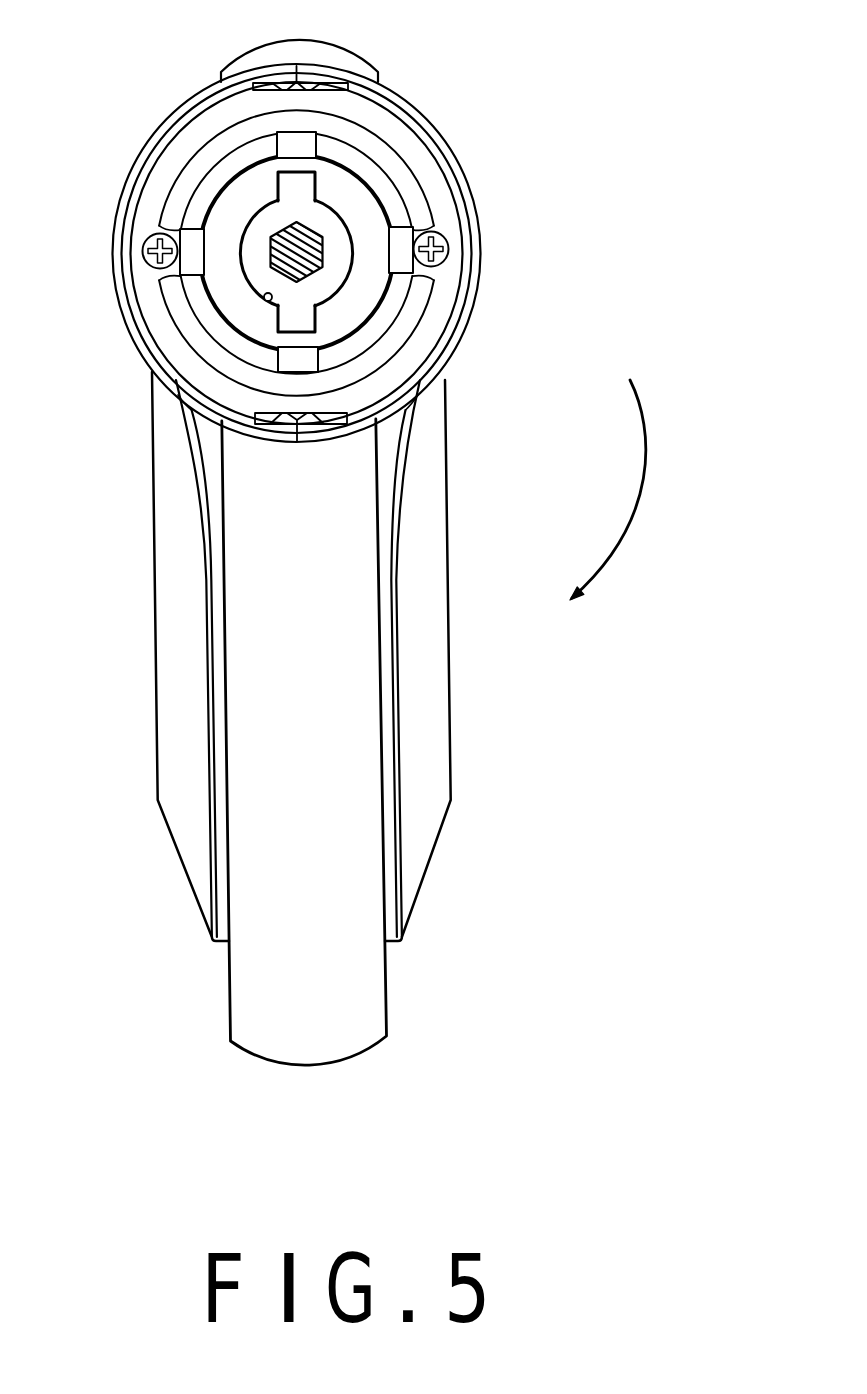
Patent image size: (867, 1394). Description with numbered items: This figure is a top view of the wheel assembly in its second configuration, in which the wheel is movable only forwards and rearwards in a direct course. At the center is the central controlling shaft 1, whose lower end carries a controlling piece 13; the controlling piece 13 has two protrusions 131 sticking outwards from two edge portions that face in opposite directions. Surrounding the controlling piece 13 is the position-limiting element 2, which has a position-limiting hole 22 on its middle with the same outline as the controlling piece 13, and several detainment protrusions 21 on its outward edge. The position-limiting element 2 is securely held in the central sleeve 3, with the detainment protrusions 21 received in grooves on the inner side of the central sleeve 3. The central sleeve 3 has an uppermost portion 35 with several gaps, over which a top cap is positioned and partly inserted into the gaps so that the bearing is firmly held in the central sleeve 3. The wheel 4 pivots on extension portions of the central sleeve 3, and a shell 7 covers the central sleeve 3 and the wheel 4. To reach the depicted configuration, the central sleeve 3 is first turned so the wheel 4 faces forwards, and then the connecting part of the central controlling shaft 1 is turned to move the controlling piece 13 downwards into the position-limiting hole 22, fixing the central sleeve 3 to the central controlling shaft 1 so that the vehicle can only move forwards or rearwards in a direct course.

The central controlling shaft 1 is at (287, 250).
The position-limiting element 2 is at (240, 193).
The central sleeve 3 is at (440, 208).
The wheel 4 is at (273, 983).
The shell 7 is at (170, 632).
The controlling piece 13 is at (327, 277).
The detainment protrusions 21 is at (297, 141).
The position-limiting hole 22 is at (270, 297).
The uppermost portion 35 is at (402, 175).
The protrusions 131 is at (300, 317).